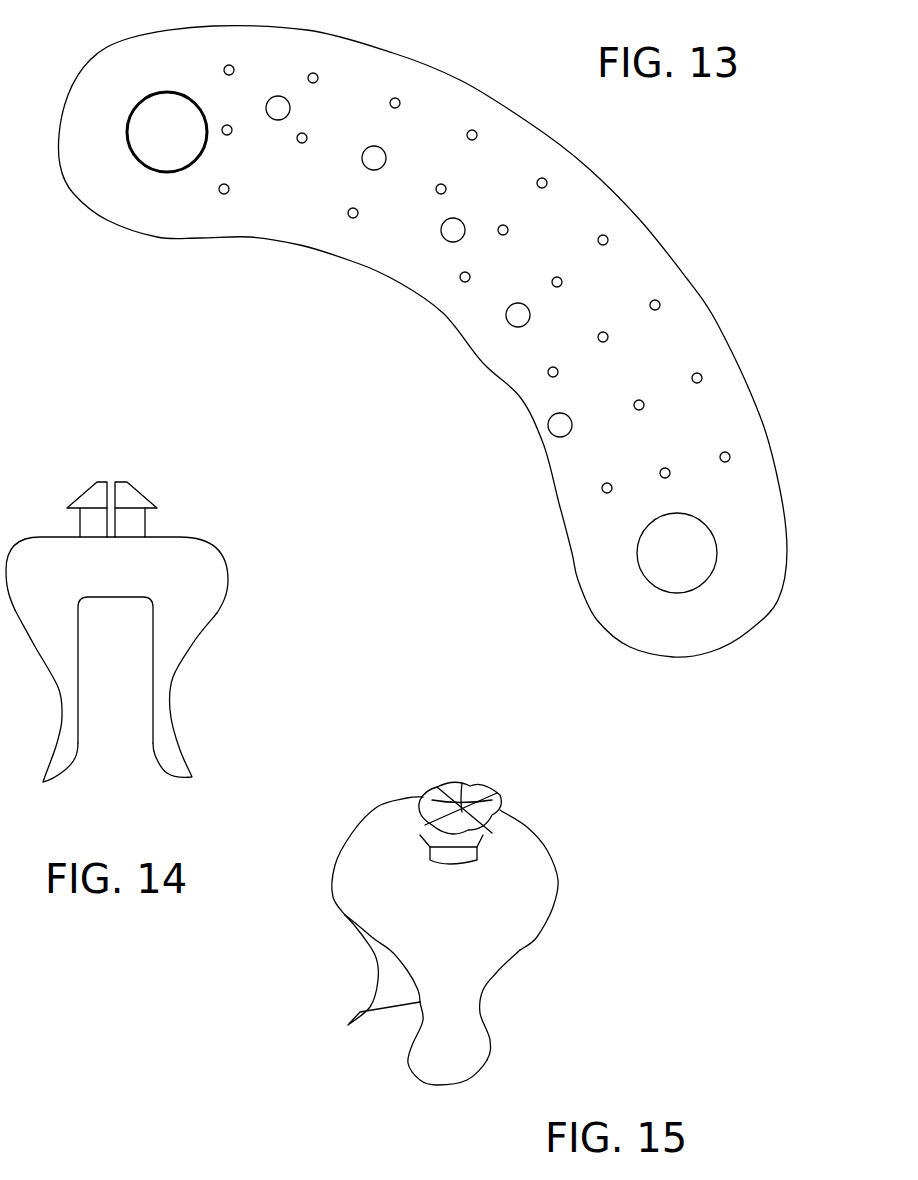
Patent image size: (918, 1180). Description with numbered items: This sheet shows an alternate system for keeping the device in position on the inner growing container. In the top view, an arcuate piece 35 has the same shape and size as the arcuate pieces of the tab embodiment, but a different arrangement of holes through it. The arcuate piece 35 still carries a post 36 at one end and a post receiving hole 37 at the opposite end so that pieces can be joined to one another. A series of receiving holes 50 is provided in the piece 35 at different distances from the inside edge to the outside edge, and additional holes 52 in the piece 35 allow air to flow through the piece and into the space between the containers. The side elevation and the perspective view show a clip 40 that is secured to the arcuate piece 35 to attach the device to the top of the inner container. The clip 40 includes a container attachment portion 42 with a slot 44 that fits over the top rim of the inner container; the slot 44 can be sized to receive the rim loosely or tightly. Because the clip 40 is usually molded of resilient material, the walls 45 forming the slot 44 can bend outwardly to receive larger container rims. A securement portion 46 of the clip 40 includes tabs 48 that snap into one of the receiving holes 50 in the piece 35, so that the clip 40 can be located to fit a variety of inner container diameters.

In FIG. 13, the arcuate piece 35 is at (445, 305).
In FIG. 13, the post 36 is at (140, 158).
In FIG. 13, the post receiving hole 37 is at (702, 540).
In FIG. 13, the receiving hole 50 is at (278, 120).
In FIG. 13, the holes 52 is at (608, 336).
In FIG. 14, the clip 40 is at (184, 618).
In FIG. 15, the clip 40 is at (452, 898).
In FIG. 14, the container attachment portion 42 is at (208, 592).
In FIG. 15, the container attachment portion 42 is at (517, 935).
In FIG. 14, the slot 44 is at (128, 673).
In FIG. 15, the slot 44 is at (388, 1032).
In FIG. 14, the walls 45 is at (162, 723).
In FIG. 15, the walls 45 is at (387, 987).
In FIG. 14, the securement portion 46 is at (165, 477).
In FIG. 15, the securement portion 46 is at (530, 799).
In FIG. 14, the tabs 48 is at (93, 490).
In FIG. 15, the tabs 48 is at (437, 787).